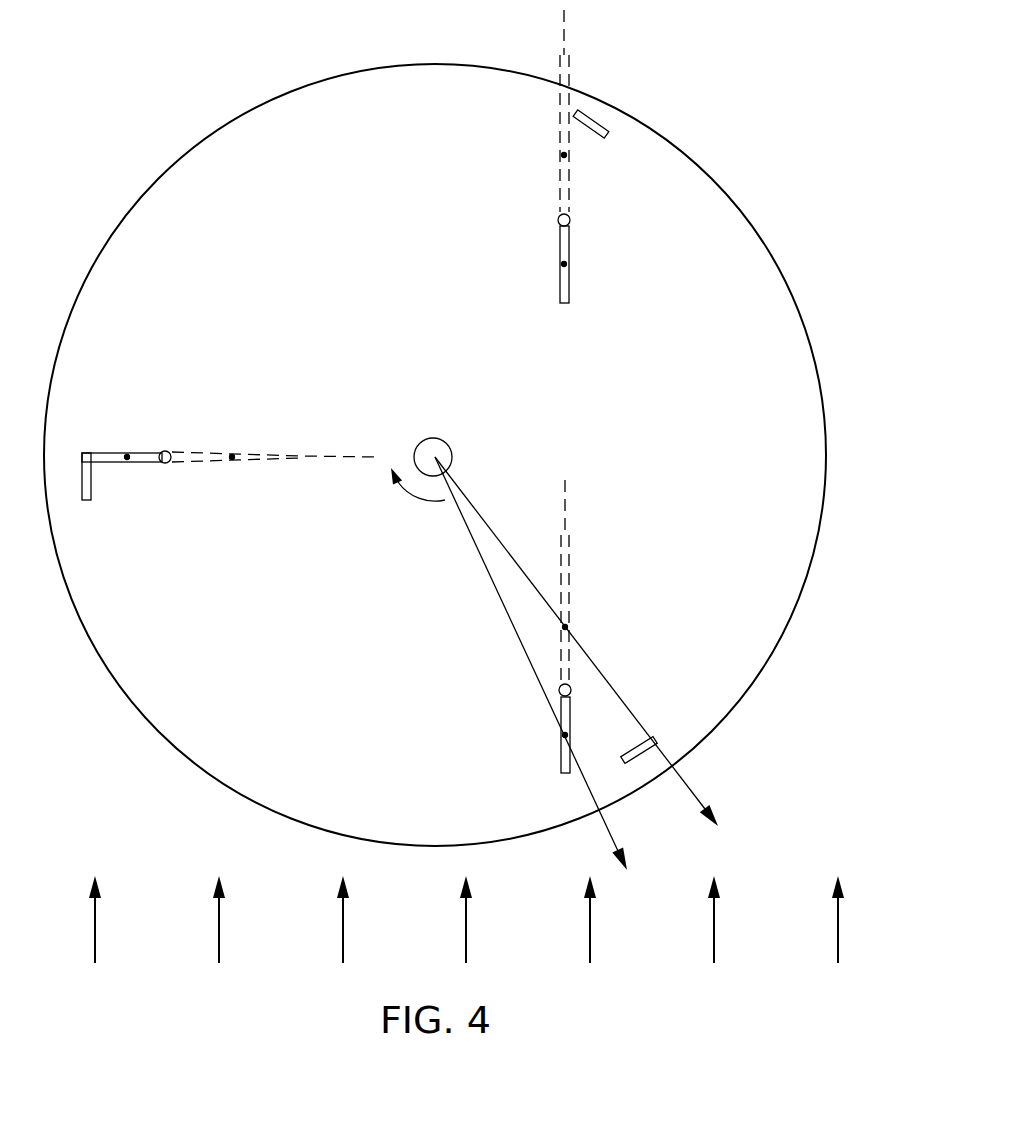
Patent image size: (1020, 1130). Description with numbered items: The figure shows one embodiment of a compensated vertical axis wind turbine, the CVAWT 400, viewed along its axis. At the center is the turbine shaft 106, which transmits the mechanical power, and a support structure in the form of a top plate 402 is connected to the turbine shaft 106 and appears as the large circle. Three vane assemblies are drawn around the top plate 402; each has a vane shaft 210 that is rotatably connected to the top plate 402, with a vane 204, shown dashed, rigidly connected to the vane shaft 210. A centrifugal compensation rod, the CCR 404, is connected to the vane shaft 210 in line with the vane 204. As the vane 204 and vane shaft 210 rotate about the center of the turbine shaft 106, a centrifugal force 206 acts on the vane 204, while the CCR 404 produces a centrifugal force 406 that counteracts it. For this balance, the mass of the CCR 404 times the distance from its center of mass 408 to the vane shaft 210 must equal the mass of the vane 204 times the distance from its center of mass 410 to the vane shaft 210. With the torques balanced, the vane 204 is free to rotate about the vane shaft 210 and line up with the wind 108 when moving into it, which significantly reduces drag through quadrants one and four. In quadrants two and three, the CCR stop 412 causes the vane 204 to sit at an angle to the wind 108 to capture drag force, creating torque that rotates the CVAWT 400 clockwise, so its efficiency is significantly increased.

The compensated VAWT 400 is at (118, 72).
The top plate 402 is at (332, 78).
The turbine shaft 106 is at (445, 440).
The centrifugal force 206 is at (485, 517).
The centrifugal force 406 is at (490, 572).
The vane 204 is at (557, 178).
The vane shaft 210 is at (570, 220).
The CCR 404 is at (560, 282).
The center of mass 408 is at (566, 264).
The center of mass 410 is at (564, 155).
The CCR stop 412 is at (590, 131).
The wind 108 is at (590, 908).